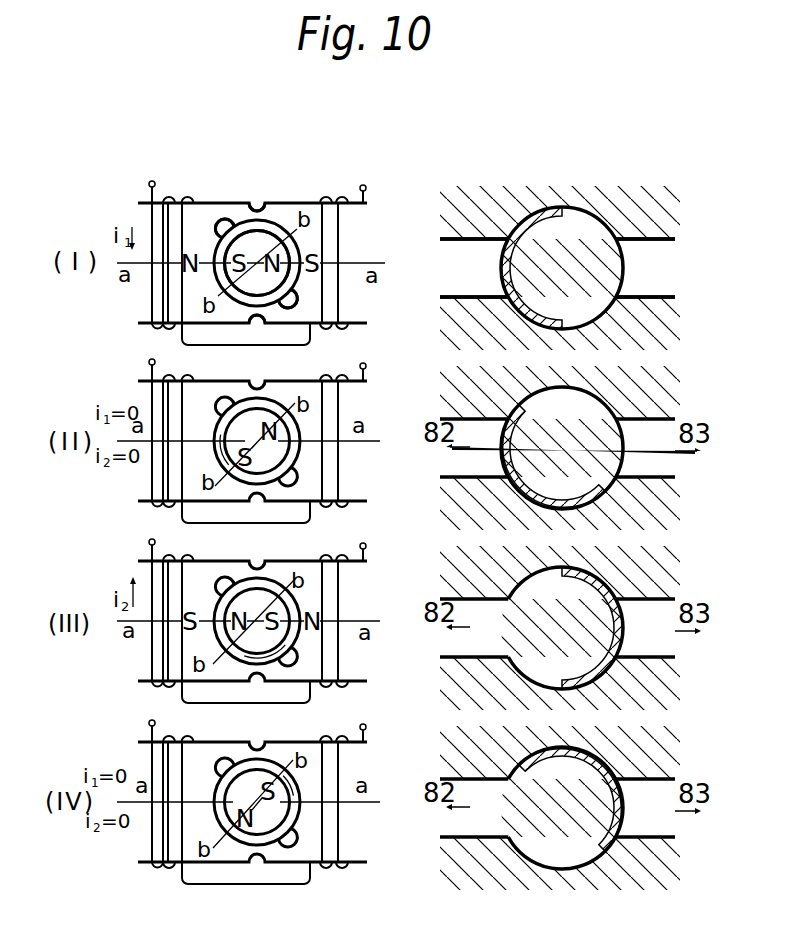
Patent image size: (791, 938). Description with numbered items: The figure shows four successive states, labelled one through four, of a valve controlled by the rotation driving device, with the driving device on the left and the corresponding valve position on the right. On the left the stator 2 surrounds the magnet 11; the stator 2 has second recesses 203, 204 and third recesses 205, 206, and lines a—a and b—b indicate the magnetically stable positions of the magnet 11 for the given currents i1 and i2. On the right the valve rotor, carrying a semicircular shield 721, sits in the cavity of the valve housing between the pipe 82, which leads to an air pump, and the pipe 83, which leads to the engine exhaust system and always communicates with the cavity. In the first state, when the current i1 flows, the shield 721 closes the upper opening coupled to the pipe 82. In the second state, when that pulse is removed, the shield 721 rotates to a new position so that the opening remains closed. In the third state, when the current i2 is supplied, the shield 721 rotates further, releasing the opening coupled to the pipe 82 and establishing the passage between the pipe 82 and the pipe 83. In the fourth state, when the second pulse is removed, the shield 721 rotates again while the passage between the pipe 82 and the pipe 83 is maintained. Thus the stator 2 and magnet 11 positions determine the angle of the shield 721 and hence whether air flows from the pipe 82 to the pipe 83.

The stator 2 is at (366, 223).
The magnet 11 is at (282, 250).
The second recess 203 is at (258, 325).
The second recess 204 is at (260, 203).
The third recess 205 is at (293, 297).
The third recess 206 is at (224, 220).
The shield 721 is at (537, 213).
The pipe 82 is at (470, 267).
The pipe 83 is at (697, 271).